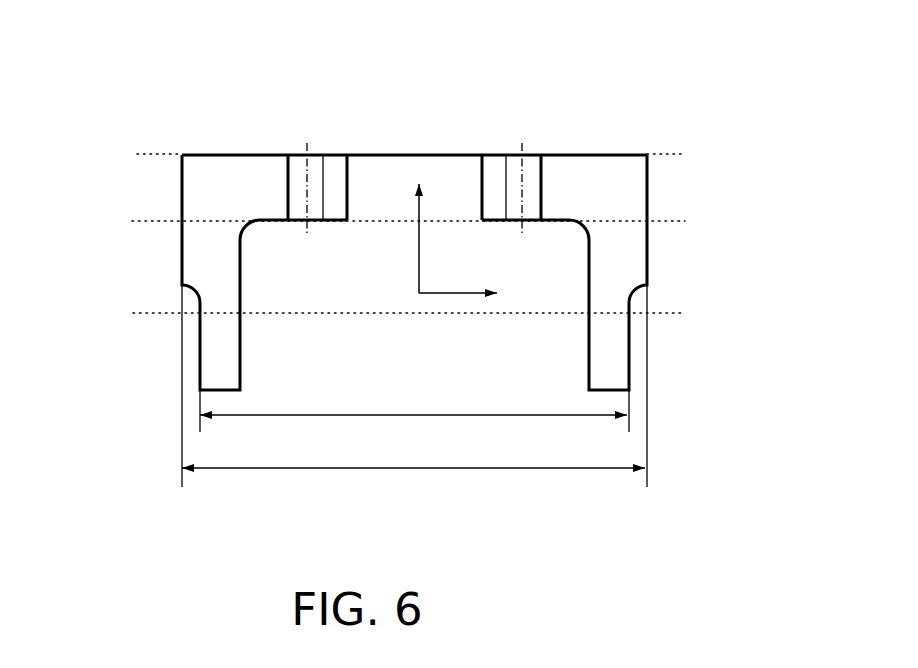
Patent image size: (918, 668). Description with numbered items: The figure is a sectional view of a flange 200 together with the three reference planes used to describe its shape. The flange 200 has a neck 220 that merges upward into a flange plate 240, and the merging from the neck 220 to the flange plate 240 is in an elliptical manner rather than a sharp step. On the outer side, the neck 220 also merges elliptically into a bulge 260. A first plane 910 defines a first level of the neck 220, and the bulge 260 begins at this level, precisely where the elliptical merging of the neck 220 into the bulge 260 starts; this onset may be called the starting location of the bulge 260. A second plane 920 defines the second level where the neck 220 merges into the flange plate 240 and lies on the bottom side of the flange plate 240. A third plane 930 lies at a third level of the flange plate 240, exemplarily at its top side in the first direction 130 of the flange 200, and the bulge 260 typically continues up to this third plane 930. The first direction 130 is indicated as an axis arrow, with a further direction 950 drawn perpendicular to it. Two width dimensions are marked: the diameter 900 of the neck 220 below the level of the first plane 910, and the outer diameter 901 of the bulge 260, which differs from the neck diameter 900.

The flange 200 is at (352, 219).
The flange plate 240 is at (215, 172).
The bulge 260 is at (190, 258).
The neck 220 is at (210, 368).
The first direction 130 is at (437, 241).
The horizontal axis direction 950 is at (458, 293).
The diameter of the neck 900 is at (414, 401).
The outer diameter of the bulge 901 is at (414, 386).
The first plane 910 is at (443, 310).
The second plane 920 is at (442, 220).
The third plane 930 is at (445, 153).